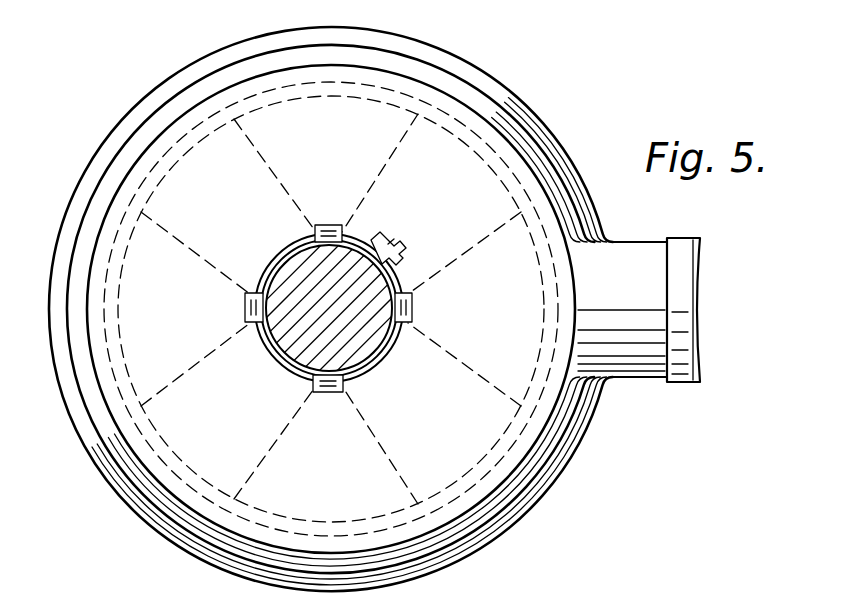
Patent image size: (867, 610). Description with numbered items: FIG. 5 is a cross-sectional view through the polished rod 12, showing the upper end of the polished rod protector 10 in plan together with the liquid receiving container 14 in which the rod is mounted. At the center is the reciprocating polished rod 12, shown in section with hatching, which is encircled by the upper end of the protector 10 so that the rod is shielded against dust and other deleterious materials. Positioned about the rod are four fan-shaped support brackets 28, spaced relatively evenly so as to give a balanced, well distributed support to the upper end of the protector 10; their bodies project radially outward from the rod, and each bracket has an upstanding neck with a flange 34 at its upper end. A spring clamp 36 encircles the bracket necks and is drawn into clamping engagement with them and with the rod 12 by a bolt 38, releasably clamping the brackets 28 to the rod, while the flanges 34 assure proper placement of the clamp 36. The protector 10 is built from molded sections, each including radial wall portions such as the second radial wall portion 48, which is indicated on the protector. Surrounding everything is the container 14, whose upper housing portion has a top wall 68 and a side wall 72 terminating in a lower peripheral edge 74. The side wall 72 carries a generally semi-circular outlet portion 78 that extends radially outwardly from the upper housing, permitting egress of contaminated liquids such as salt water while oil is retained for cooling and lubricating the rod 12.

The polished rod protector 10 is at (331, 304).
The polished rod 12 is at (384, 304).
The liquid receiving container 14 is at (331, 304).
The support bracket 28 is at (422, 462).
The flange 34 is at (333, 394).
The spring clamp 36 is at (376, 364).
The bolt 38 is at (406, 251).
The second radial wall portion 48 is at (267, 128).
The top wall 68 is at (522, 155).
The side wall 72 is at (487, 100).
The lower peripheral edge 74 is at (463, 35).
The outlet portion 78 is at (631, 352).